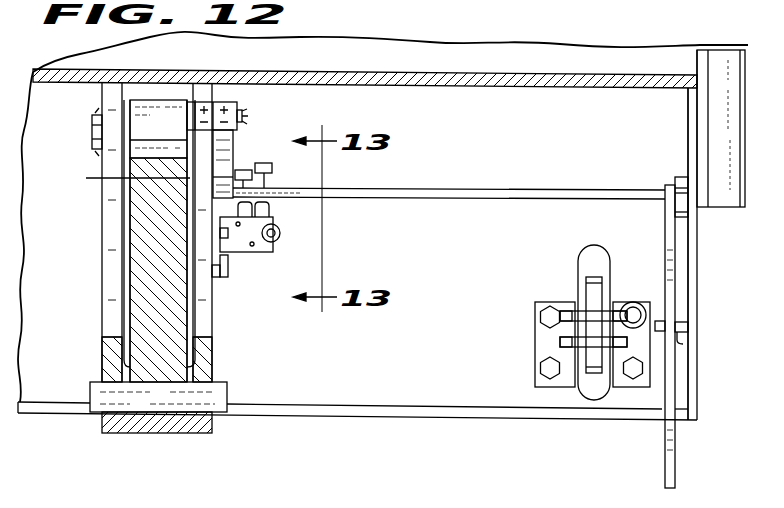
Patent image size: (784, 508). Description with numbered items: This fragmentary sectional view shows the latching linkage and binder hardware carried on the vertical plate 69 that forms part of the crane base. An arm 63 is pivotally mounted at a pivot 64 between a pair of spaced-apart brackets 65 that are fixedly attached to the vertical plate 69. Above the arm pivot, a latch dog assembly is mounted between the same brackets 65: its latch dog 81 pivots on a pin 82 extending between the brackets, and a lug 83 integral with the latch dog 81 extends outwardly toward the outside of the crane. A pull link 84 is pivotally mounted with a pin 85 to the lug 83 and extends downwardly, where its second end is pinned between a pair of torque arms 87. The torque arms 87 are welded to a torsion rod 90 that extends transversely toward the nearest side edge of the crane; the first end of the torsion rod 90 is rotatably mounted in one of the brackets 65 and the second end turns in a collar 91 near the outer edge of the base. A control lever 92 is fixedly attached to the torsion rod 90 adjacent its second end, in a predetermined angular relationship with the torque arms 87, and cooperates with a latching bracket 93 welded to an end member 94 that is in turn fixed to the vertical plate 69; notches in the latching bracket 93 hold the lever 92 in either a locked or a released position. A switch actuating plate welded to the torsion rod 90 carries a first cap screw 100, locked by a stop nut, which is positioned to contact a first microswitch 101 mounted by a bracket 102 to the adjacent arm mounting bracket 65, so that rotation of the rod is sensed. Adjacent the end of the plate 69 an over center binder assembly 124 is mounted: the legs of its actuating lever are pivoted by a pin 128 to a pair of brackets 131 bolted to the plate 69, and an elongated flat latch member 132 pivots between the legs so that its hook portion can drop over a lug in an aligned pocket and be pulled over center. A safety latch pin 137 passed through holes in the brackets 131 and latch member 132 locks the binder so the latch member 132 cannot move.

The arm 63 is at (163, 328).
The pivot 64 is at (225, 400).
The bracket 65 is at (102, 280).
The vertical plate 69 is at (442, 393).
The latch dog 81 is at (157, 100).
The pin 82 is at (92, 128).
The lug 83 is at (220, 101).
The pull link 84 is at (230, 160).
The pin 85 is at (242, 113).
The torque arm 87 is at (280, 156).
The torsion rod 90 is at (490, 190).
The collar 91 is at (683, 177).
The control lever 92 is at (660, 233).
The latching bracket 93 is at (684, 335).
The end member 94 is at (697, 288).
The first cap screw 100 is at (273, 170).
The first microswitch 101 is at (270, 213).
The bracket 102 is at (227, 273).
The over center binder assembly 124 is at (583, 265).
The pin 128 is at (560, 343).
The bracket 131 is at (535, 320).
The latch member 132 is at (593, 290).
The safety latch pin 137 is at (620, 310).